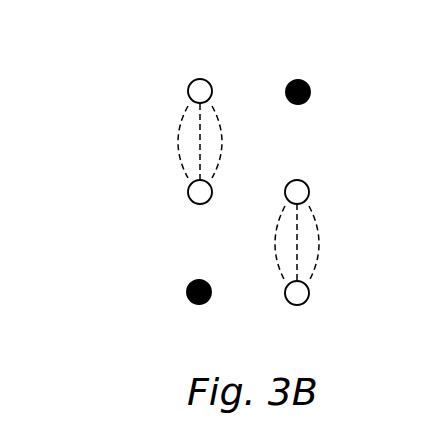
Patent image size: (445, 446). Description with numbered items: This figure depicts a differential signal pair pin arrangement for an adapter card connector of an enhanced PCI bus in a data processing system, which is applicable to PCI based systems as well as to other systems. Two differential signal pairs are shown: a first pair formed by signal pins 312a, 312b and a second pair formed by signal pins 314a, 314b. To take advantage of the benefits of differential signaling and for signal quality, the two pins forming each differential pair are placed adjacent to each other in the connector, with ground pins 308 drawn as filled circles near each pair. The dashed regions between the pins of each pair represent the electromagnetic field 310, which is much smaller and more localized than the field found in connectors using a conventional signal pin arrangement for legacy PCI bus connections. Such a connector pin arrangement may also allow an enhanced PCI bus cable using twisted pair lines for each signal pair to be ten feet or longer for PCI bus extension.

The ground pin 308 is at (310, 93).
The electromagnetic field 310 is at (142, 136).
The signal pin 312a is at (188, 93).
The signal pin 312b is at (188, 193).
The signal pin 314a is at (309, 295).
The signal pin 314b is at (309, 194).